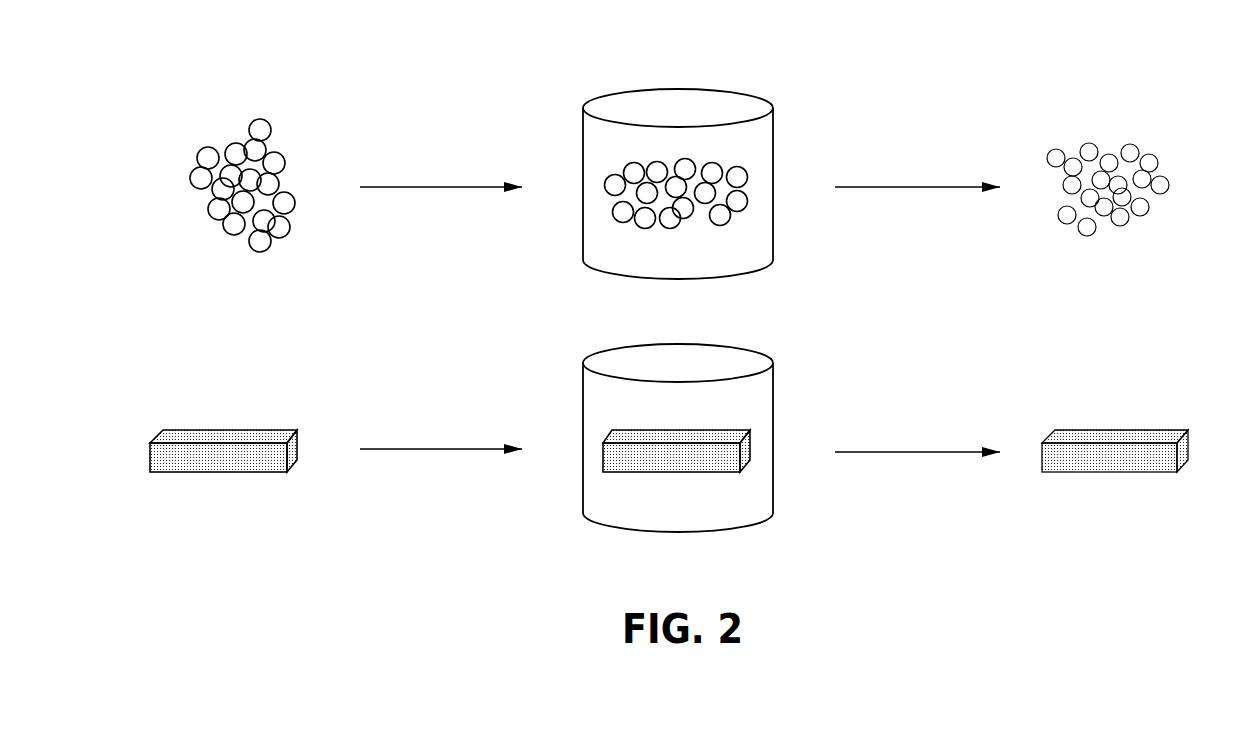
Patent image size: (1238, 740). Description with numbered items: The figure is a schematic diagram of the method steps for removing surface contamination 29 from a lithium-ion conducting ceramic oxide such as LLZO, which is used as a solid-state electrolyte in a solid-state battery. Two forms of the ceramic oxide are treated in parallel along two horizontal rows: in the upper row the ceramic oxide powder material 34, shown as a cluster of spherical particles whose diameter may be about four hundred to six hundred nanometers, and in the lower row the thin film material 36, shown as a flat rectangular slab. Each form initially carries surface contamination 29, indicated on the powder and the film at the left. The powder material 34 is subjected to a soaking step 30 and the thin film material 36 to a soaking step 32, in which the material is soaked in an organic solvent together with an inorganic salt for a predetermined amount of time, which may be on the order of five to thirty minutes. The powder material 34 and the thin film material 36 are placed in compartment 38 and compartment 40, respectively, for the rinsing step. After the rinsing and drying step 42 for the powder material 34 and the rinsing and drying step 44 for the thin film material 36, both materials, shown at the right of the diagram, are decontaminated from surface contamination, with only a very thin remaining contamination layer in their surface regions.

The surface contamination 29 is at (208, 140).
The Li+ conducting ceramic oxide powder material 34 is at (236, 118).
The thin film material 36 is at (226, 410).
The soaking step 30 is at (387, 185).
The soaking step 32 is at (387, 448).
The compartment 38 is at (677, 85).
The compartment 40 is at (677, 340).
The rinsing and drying step 42 is at (877, 190).
The rinsing and drying step 44 is at (877, 453).